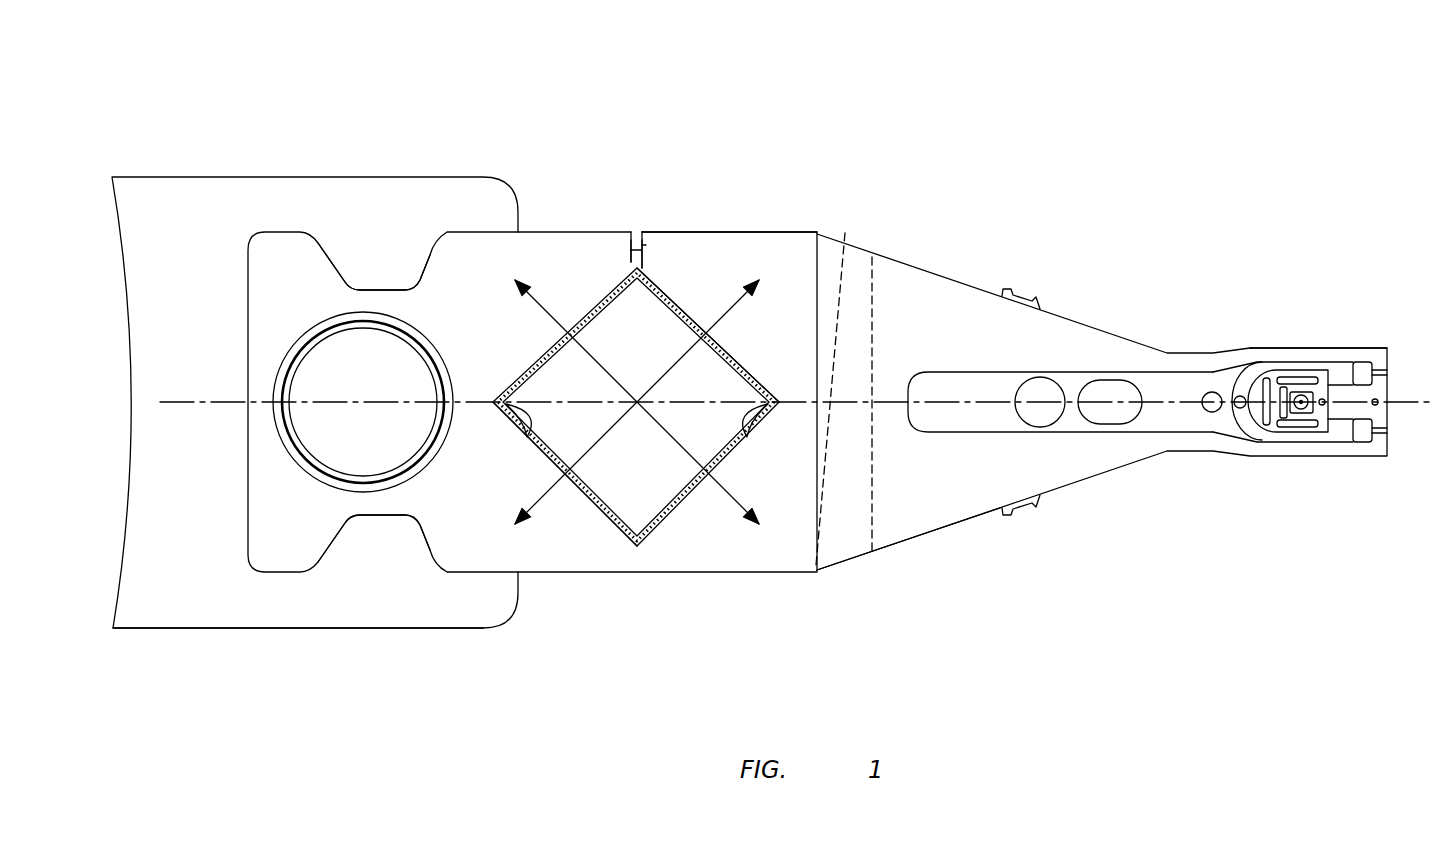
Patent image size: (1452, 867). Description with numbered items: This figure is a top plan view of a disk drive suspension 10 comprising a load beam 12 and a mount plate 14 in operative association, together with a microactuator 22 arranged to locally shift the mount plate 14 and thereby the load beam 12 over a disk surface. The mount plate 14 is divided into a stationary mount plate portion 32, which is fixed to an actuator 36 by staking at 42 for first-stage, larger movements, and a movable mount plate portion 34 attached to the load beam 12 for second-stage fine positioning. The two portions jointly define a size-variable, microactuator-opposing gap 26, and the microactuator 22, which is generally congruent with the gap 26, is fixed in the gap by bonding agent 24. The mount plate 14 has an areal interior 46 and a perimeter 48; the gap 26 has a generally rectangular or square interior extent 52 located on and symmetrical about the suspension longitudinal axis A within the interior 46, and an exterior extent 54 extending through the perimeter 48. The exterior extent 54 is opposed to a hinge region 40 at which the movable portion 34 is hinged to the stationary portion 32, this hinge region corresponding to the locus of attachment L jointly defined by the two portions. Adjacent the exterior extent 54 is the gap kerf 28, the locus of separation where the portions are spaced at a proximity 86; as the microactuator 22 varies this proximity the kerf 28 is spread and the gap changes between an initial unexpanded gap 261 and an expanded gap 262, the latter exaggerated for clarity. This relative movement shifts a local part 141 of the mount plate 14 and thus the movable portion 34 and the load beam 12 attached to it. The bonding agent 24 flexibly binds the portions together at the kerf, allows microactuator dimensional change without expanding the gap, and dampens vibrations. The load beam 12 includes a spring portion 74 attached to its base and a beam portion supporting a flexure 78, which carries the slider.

The disk drive suspension 10 is at (574, 124).
The load beam 12 is at (860, 243).
The mount plate 14 is at (320, 237).
The microactuator 22 is at (654, 484).
The bonding agent 24 is at (738, 360).
The gap 26 is at (710, 432).
The gap kerf 28 is at (625, 237).
The stationary mount plate portion 32 is at (455, 237).
The movable mount plate portion 34 is at (787, 430).
The actuator 36 is at (158, 605).
The hinge region 40 is at (642, 553).
The staking 42 is at (300, 438).
The areal interior 46 is at (478, 308).
The perimeter 48 is at (380, 517).
The gap interior extent 52 is at (528, 436).
The gap exterior extent 54 is at (637, 232).
The spring portion 74 is at (838, 525).
The flexure 78 is at (1297, 367).
The proximity 86 is at (630, 262).
The local part of mount plate 141 is at (725, 248).
The initial unexpanded gap 261 is at (647, 240).
The expanded gap 262 is at (647, 245).
The suspension longitudinal axis A is at (796, 422).
The locus of attachment L is at (628, 552).